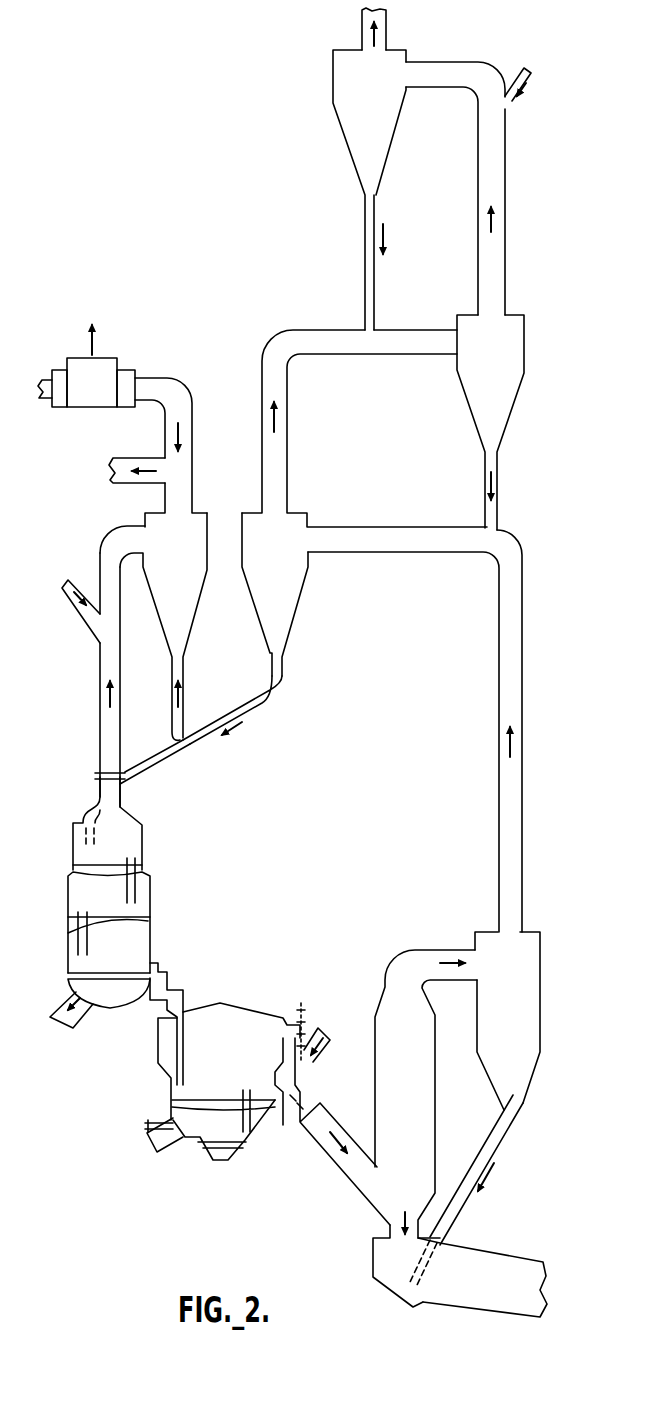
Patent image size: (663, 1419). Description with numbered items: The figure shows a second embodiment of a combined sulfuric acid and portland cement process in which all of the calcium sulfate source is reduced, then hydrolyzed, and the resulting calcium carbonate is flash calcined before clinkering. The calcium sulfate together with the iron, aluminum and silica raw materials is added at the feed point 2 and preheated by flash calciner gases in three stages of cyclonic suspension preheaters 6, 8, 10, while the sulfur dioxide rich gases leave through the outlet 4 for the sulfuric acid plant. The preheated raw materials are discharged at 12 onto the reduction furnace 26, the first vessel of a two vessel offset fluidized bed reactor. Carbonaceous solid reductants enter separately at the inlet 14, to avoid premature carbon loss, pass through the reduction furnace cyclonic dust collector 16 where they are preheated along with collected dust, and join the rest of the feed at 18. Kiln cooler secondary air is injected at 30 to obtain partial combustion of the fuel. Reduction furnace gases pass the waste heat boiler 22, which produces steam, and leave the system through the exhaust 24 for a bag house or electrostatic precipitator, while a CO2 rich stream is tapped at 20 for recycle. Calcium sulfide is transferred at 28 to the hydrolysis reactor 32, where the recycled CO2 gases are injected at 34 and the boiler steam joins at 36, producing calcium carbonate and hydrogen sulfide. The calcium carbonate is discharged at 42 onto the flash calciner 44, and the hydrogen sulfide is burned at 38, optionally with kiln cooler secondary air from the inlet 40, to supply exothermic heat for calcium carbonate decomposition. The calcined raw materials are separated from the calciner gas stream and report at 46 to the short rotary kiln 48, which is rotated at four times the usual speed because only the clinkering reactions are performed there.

The feed point 2 is at (508, 90).
The outlet for SO2 rich gases 4 is at (361, 22).
The first stage suspension preheater 6 is at (340, 124).
The second stage suspension preheater 8 is at (472, 416).
The third stage suspension preheater 10 is at (302, 591).
The preheated raw materials discharge 12 is at (250, 708).
The inlet for carbonaceous solid reductants 14 is at (85, 597).
The reduction furnace cyclonic dust collector 16 is at (196, 613).
The reductant and dust junction 18 is at (170, 742).
The CO2 recycle gas tap 20 is at (146, 457).
The waste heat boiler 22 is at (125, 368).
The reduction furnace cyclone exhaust 24 is at (54, 369).
The reduction furnace 26 is at (151, 885).
The calcium sulfide transfer point 28 is at (167, 981).
The kiln cooler secondary air injection 30 is at (83, 1022).
The hydrolysis reactor 32 is at (168, 1086).
The CO2 recycle gas injection 34 is at (166, 1153).
The steam inlet 36 is at (158, 1120).
The hydrogen sulfide oxidation point 38 is at (304, 1008).
The rotary kiln cooler secondary air inlet 40 is at (326, 1054).
The calcium carbonate discharge 42 is at (283, 1125).
The flash calciner 44 is at (374, 1078).
The rotary kiln discharge 46 is at (490, 1136).
The short rotary kiln 48 is at (466, 1247).